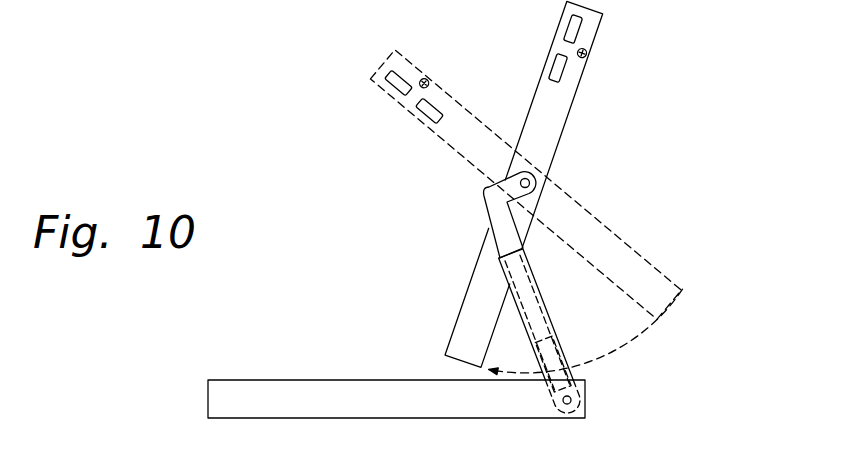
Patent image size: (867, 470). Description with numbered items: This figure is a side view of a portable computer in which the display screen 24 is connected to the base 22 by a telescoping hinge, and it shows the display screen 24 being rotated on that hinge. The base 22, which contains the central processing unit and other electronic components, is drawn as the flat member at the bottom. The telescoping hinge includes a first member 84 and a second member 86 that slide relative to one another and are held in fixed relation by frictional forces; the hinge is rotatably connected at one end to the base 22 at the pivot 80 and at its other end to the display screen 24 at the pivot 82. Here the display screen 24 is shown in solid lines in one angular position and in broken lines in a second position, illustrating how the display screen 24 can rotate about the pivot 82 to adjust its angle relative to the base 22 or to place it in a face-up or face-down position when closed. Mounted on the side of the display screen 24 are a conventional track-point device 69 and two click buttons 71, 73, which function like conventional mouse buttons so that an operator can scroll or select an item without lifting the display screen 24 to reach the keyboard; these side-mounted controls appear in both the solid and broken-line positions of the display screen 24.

The base 22 is at (208, 397).
The display screen 24 is at (571, 113).
The track-point device 69 is at (587, 53).
The click button 71 is at (567, 23).
The click button 73 is at (552, 62).
The pivot 80 is at (578, 398).
The pivot 82 is at (538, 168).
The first member 84 is at (547, 306).
The second member 86 is at (484, 190).